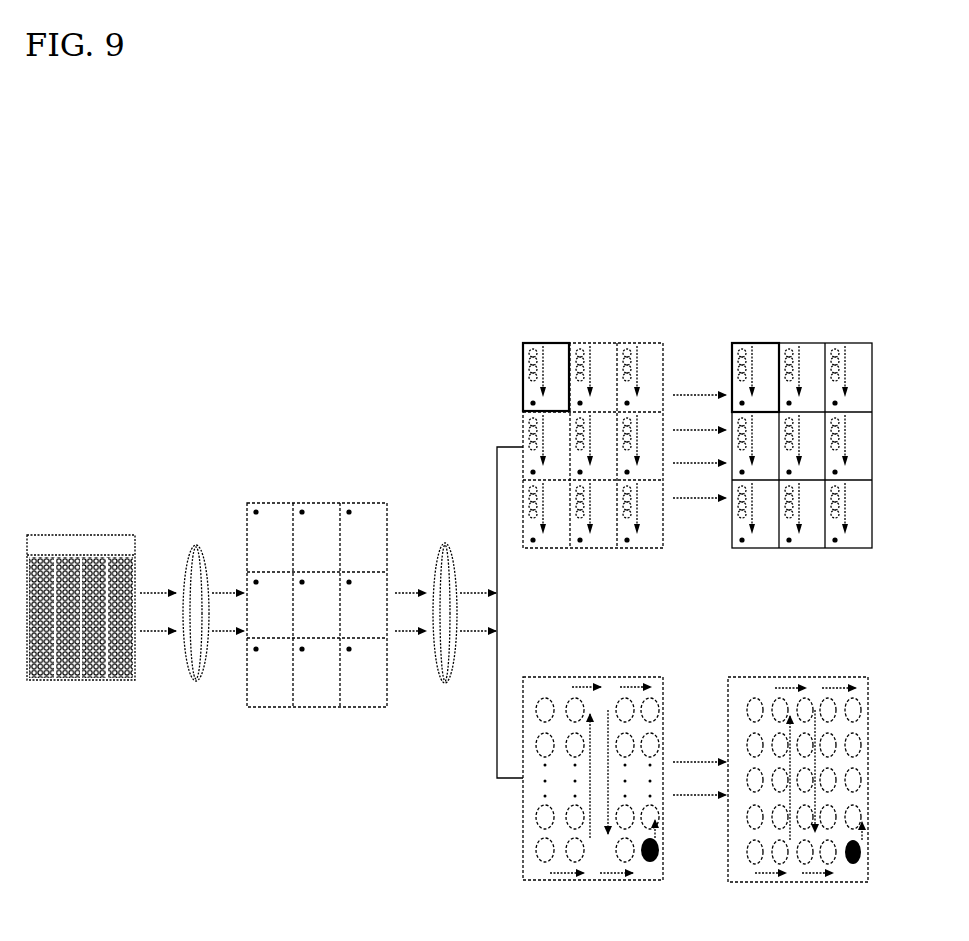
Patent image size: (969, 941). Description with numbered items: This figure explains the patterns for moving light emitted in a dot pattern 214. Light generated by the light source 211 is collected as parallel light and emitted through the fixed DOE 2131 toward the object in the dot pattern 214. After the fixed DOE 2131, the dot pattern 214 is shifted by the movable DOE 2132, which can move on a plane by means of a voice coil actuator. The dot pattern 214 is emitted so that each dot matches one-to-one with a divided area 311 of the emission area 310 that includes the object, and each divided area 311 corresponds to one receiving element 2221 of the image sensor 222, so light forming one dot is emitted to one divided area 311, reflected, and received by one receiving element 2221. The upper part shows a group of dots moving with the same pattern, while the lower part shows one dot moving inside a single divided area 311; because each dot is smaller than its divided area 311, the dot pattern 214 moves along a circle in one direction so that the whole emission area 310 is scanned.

The light source 211 is at (92, 547).
The fixed DOE 2131 is at (195, 545).
The dot pattern 214 is at (253, 502).
The movable DOE 2132 is at (445, 543).
The emission area 310 is at (636, 342).
The divided area 311 is at (545, 342).
The image sensor 222 is at (848, 342).
The receiving element 2221 is at (752, 342).